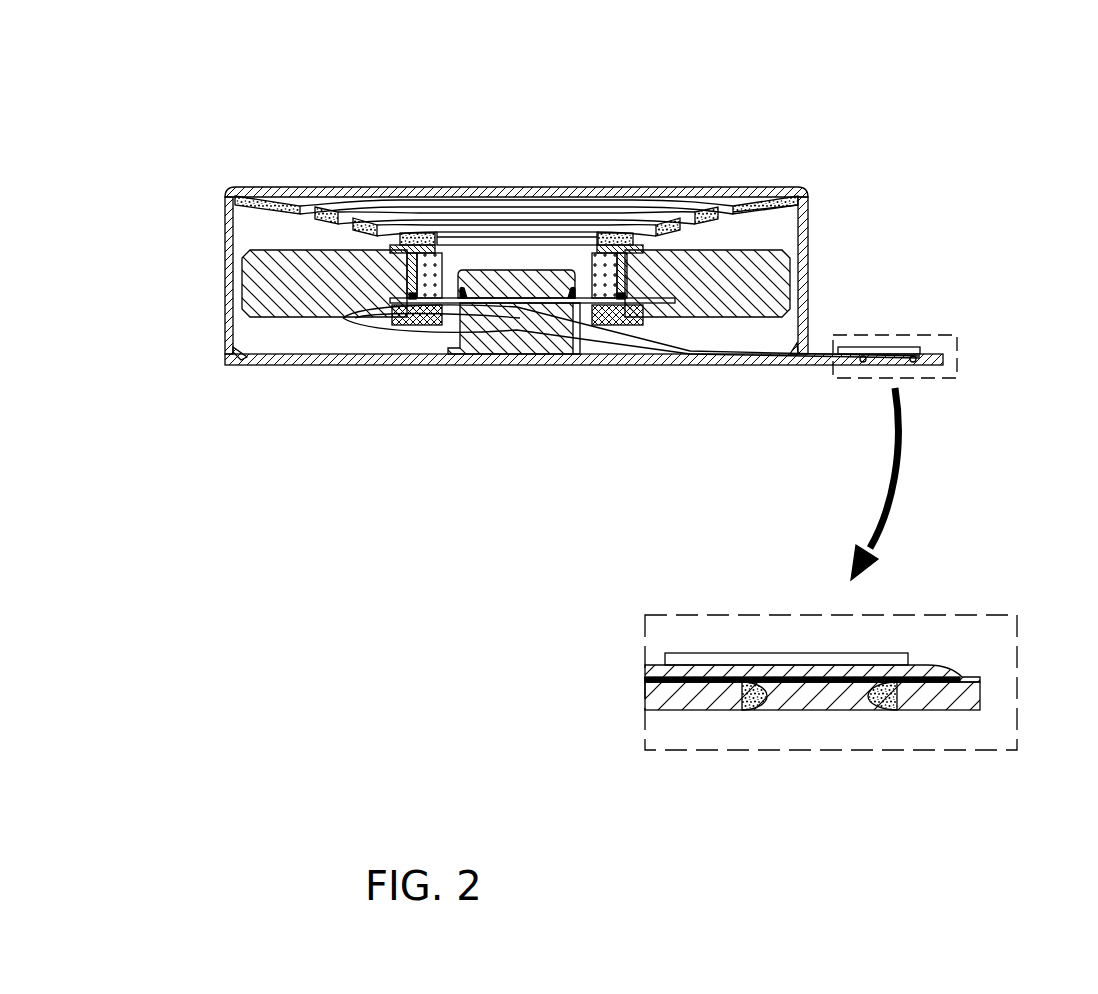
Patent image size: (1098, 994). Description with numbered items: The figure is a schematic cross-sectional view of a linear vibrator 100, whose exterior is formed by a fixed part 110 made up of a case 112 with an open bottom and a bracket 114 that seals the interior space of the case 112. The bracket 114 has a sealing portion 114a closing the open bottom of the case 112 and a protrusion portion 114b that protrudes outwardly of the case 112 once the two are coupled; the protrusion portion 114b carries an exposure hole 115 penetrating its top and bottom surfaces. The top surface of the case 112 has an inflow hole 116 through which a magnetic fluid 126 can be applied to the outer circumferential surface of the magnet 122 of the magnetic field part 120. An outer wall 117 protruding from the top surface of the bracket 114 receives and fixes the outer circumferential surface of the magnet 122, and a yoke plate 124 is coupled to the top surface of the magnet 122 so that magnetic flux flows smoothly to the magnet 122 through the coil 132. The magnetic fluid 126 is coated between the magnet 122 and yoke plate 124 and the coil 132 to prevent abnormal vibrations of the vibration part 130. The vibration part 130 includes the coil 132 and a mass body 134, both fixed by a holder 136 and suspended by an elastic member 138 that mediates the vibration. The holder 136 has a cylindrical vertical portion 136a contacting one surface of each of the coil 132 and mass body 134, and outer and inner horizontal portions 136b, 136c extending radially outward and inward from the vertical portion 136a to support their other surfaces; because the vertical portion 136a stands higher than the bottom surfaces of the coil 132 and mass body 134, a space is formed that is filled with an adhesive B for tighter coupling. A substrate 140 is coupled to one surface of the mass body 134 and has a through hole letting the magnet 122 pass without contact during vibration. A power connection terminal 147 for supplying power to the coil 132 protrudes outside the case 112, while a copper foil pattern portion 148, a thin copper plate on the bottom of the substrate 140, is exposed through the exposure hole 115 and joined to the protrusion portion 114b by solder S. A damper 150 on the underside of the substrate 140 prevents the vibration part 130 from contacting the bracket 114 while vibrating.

The linear vibrator 100 is at (271, 75).
The fixed part 110 is at (120, 308).
The case 112 is at (229, 323).
The bracket 114 is at (234, 368).
The sealing portion 114a is at (875, 455).
The protrusion portion 114b is at (843, 366).
The exposure hole 115 is at (887, 690).
The inflow hole 116 is at (621, 190).
The outer wall 117 is at (432, 356).
The magnetic field part 120 is at (565, 427).
The magnet 122 is at (538, 330).
The yoke plate 124 is at (493, 288).
The magnetic fluid 126 is at (576, 305).
The vibration part 130 is at (880, 200).
The coil 132 is at (672, 283).
The mass body 134 is at (745, 348).
The holder 136 is at (466, 231).
The vertical portion 136a is at (405, 279).
The outer horizontal portion 136b is at (397, 246).
The inner horizontal portion 136c is at (413, 232).
The elastic member 138 is at (762, 220).
The substrate 140 is at (937, 343).
The power connection terminal 147 is at (905, 350).
The copper foil pattern portion 148 is at (717, 683).
The damper 150 is at (630, 326).
The adhesive B is at (408, 296).
The solder S is at (757, 688).